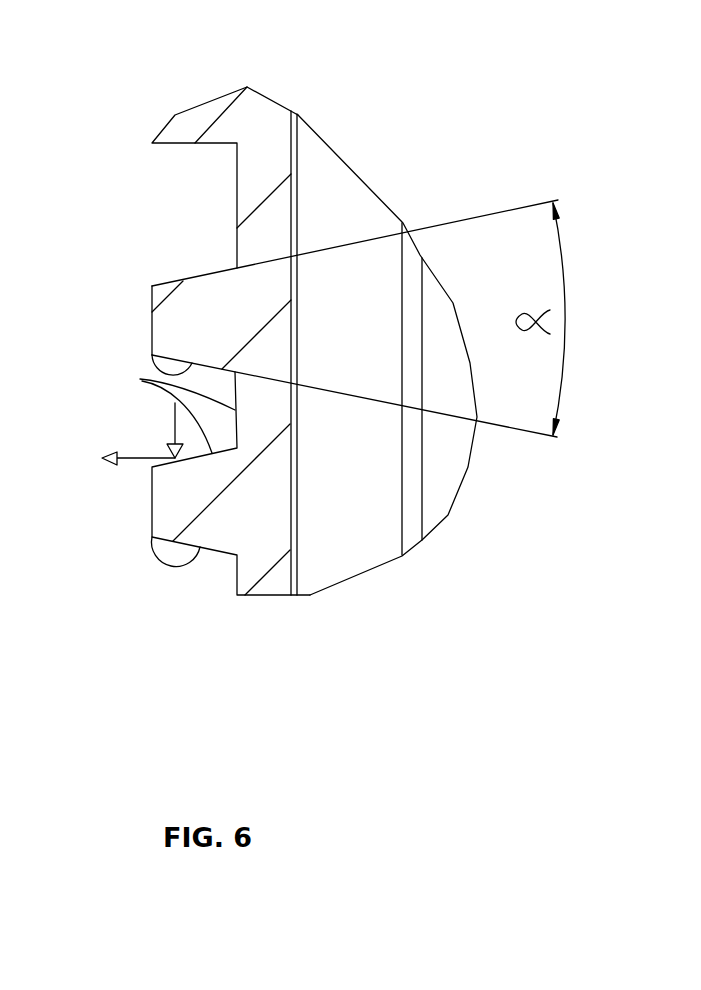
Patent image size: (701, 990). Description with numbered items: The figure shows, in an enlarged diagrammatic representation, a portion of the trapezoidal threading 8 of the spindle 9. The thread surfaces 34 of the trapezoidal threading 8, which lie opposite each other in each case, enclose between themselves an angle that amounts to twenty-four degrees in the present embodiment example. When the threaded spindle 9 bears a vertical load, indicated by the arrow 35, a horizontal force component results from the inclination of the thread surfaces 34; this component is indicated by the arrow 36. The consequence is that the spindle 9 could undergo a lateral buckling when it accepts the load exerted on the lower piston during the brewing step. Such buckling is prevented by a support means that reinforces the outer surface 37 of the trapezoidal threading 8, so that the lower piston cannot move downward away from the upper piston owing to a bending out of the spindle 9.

The trapezoidal threading 8 is at (186, 92).
The spindle 9 is at (332, 163).
The thread surfaces 34 is at (193, 272).
The arrow 35 is at (174, 419).
The arrow 36 is at (132, 460).
The outer surface 37 is at (131, 317).